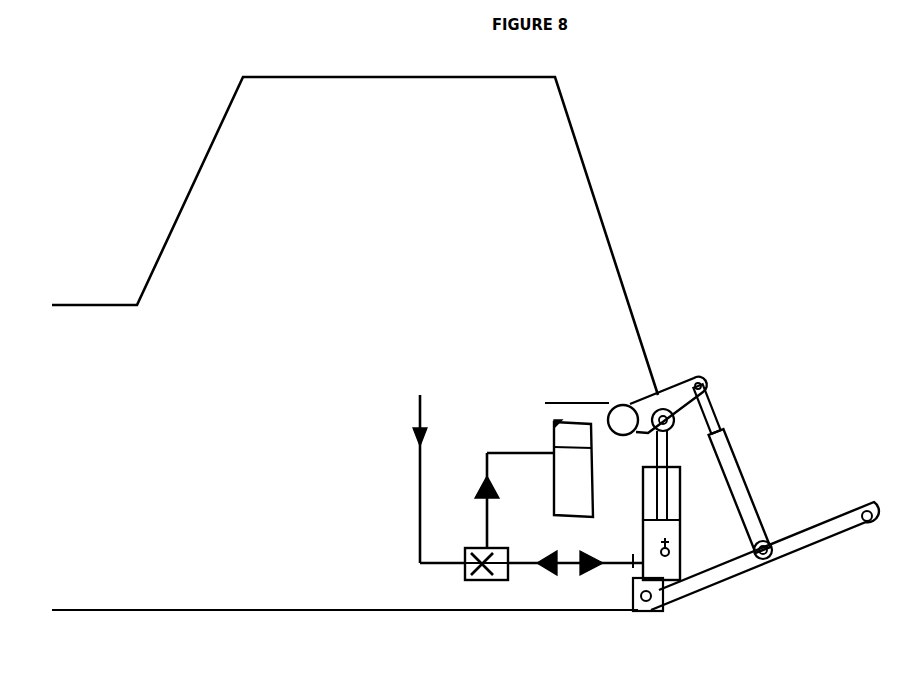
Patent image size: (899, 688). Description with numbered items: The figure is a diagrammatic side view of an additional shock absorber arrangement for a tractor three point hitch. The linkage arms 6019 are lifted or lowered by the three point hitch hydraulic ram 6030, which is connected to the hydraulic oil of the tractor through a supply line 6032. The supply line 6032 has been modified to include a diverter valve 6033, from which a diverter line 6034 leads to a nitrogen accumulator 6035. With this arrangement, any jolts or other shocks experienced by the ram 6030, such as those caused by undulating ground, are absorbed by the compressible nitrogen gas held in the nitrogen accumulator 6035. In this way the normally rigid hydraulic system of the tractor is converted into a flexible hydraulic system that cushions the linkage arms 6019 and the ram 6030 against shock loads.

The linkage arms 6019 is at (684, 392).
The three point hitch hydraulic ram 6030 is at (680, 548).
The supply line 6032 is at (420, 470).
The diverter valve 6033 is at (465, 580).
The diverter line 6034 is at (502, 452).
The nitrogen accumulator 6035 is at (553, 490).